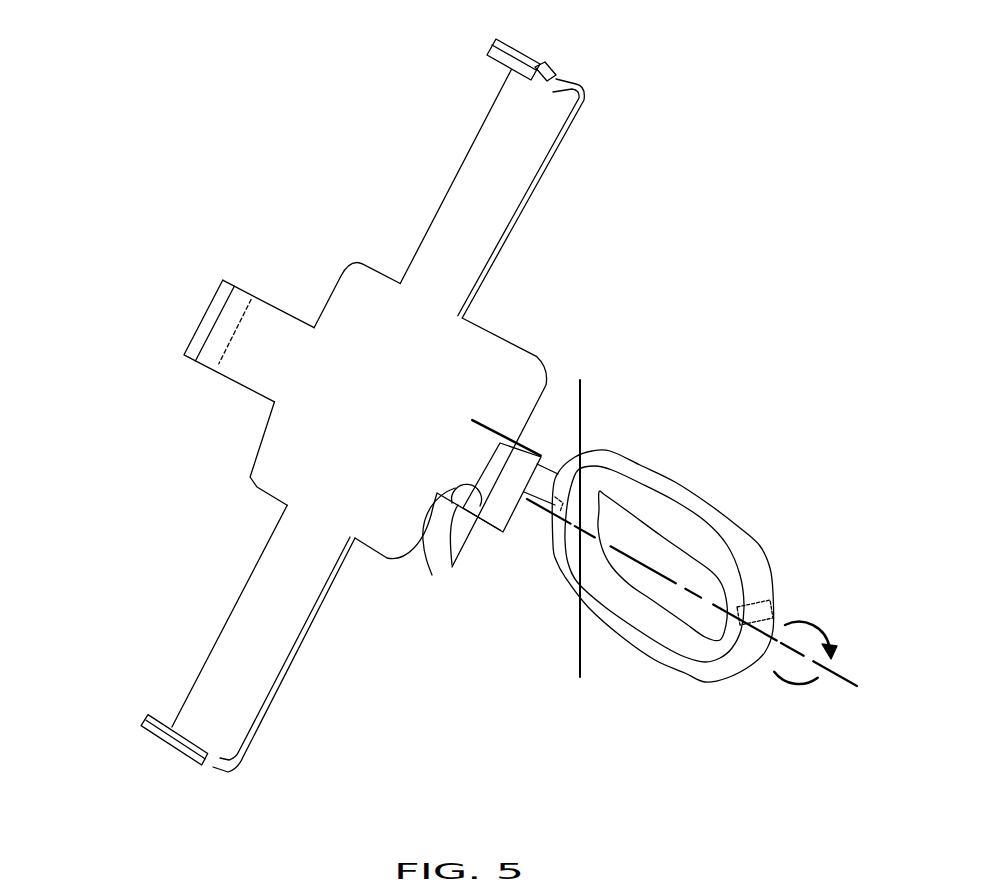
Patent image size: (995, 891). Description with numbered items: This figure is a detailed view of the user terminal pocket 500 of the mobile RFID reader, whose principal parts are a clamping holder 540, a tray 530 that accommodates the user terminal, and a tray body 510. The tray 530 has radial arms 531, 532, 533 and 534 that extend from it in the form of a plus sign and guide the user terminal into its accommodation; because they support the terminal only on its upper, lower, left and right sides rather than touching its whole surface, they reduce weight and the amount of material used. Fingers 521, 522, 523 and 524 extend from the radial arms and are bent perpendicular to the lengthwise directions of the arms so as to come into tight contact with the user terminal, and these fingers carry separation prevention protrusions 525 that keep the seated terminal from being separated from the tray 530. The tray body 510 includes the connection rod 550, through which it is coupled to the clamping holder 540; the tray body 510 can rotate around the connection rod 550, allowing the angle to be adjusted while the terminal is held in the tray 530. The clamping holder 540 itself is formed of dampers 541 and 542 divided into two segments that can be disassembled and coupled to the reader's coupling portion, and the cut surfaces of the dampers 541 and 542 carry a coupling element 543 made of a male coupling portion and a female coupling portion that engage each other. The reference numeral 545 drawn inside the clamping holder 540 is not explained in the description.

The user terminal pocket 500 is at (236, 413).
The tray body 510 is at (522, 368).
The finger 521 is at (225, 323).
The finger 522 is at (500, 510).
The finger 523 is at (567, 79).
The finger 524 is at (215, 773).
The separation prevention protrusion 525 is at (543, 63).
The tray 530 is at (357, 443).
The radial arm 531 is at (505, 167).
The radial arm 532 is at (267, 350).
The radial arm 533 is at (250, 642).
The radial arm 534 is at (433, 567).
The clamping holder 540 is at (680, 460).
The damper 541 is at (707, 517).
The damper 542 is at (712, 667).
The coupling element 543 is at (770, 585).
The ring opening 545 is at (645, 583).
The connection rod 550 is at (553, 500).